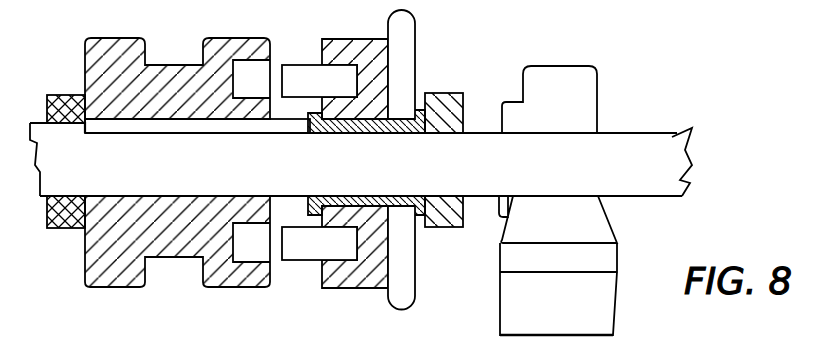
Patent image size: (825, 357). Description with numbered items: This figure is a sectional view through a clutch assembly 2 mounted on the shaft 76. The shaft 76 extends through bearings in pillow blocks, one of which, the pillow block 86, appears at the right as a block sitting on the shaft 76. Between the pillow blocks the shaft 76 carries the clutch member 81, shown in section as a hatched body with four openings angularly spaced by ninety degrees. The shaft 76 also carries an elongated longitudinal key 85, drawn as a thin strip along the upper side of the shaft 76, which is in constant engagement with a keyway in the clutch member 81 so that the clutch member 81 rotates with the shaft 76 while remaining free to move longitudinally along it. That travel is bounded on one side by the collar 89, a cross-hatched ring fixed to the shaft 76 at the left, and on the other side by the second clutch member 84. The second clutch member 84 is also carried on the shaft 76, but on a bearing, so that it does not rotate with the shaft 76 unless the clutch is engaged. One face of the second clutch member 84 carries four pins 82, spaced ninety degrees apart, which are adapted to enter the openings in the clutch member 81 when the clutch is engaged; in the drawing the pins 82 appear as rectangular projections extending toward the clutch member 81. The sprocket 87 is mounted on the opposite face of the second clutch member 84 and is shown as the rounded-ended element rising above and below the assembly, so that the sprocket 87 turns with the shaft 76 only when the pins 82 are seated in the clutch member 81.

The apparatus 2 is at (0, 19).
The shaft 76 is at (673, 137).
The clutch member 81 is at (207, 288).
The pins 82 is at (303, 72).
The second clutch member 84 is at (355, 289).
The elongated longitudinal key 85 is at (253, 127).
The pillow block 86 is at (585, 85).
The sprocket 87 is at (408, 53).
The collar 89 is at (72, 95).